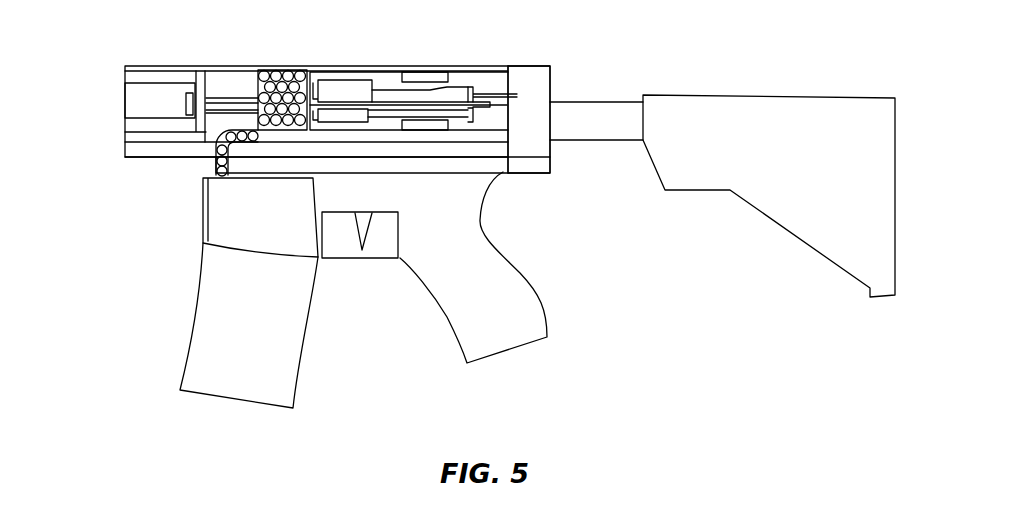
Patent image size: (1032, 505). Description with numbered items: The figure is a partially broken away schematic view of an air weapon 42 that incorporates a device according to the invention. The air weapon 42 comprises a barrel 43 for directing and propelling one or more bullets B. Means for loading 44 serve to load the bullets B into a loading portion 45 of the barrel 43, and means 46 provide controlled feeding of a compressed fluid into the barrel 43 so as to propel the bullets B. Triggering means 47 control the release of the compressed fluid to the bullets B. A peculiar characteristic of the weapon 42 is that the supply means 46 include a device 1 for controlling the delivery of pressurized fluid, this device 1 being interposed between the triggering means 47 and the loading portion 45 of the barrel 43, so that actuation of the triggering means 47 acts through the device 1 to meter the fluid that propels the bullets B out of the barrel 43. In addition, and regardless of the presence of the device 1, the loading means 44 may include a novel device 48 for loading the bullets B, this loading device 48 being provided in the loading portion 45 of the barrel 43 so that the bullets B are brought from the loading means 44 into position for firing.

The device for controlling the delivery of pressurized fluid 1 is at (390, 65).
The air weapon 42 is at (117, 70).
The barrel 43 is at (160, 160).
The means for loading 44 is at (238, 63).
The loading portion 45 is at (290, 68).
The means for controlled feeding of a compressed fluid 46 is at (475, 63).
The triggering means 47 is at (370, 247).
The device for loading bullets 48 is at (203, 57).
The bullets B is at (215, 168).